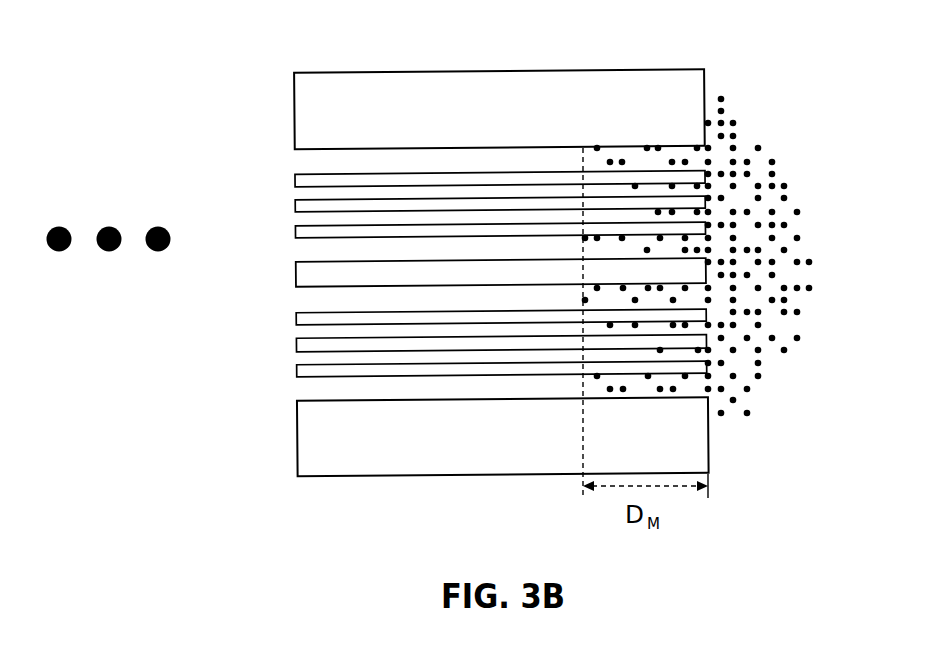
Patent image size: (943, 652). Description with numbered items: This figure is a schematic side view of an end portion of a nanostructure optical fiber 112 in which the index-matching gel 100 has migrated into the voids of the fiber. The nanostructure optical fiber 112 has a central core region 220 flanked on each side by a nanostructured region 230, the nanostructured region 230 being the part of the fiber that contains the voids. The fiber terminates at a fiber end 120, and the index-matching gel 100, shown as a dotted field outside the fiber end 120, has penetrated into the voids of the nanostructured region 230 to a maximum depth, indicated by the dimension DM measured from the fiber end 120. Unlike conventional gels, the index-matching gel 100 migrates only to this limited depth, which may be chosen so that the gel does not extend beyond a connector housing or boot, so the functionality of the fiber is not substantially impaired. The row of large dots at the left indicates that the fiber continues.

The index-matching gel 100 is at (770, 112).
The nanostructure optical fiber 112 is at (387, 53).
The fiber end 120 is at (708, 430).
The core region 220 is at (296, 272).
The nanostructured region 230 is at (282, 148).